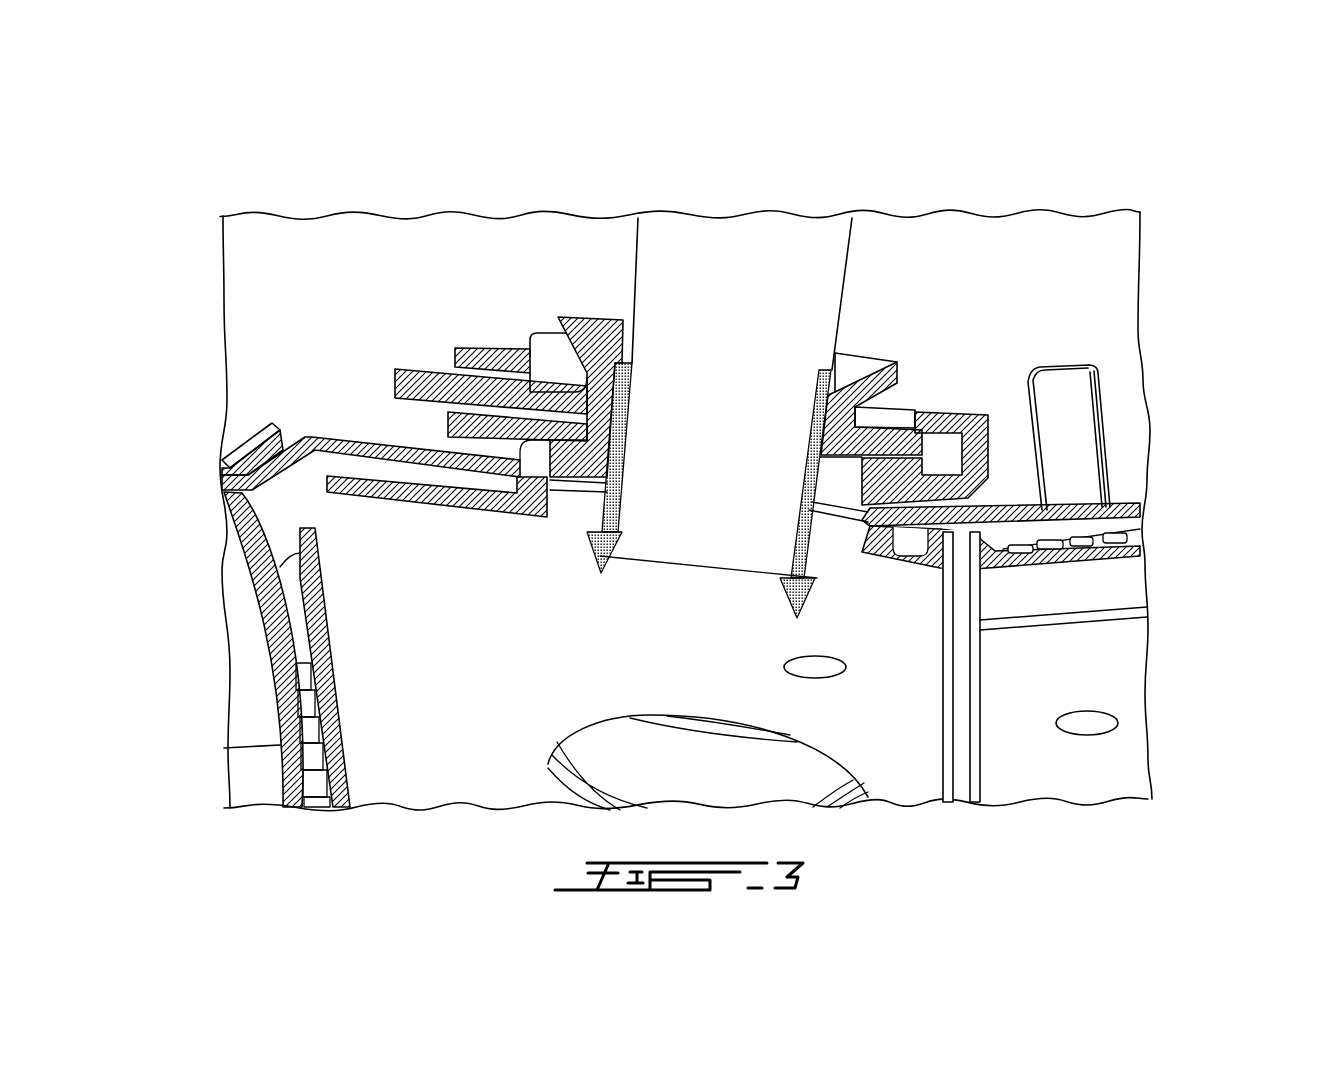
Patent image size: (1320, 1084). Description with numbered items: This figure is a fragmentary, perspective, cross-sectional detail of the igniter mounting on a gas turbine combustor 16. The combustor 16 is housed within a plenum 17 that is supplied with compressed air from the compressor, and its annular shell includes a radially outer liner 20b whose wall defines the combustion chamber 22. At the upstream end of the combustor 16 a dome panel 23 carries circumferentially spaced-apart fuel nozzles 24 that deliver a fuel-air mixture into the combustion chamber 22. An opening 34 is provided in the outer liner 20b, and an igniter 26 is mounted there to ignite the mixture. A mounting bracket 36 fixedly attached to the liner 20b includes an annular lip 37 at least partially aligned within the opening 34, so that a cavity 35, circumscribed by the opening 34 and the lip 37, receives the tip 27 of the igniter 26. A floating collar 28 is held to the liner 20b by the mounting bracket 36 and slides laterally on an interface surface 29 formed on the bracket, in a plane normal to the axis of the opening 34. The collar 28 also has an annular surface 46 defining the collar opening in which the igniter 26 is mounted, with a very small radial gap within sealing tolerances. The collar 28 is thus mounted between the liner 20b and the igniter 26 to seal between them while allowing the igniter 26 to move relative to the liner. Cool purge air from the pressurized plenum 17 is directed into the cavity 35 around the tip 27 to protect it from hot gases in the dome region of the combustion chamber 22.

The combustor 16 is at (1160, 561).
The plenum 17 is at (1057, 297).
The radially outer liner 20b is at (1008, 514).
The combustion chamber 22 is at (1108, 667).
The dome panel 23 is at (270, 617).
The fuel nozzle 24 is at (257, 770).
The igniter 26 is at (727, 257).
The tip 27 is at (690, 547).
The floating collar 28 is at (893, 353).
The interface surface 29 is at (502, 405).
The opening 34 is at (560, 495).
The cavity 35 is at (588, 400).
The mounting bracket 36 is at (988, 472).
The annular lip 37 is at (852, 515).
The annular surface 46 is at (628, 378).